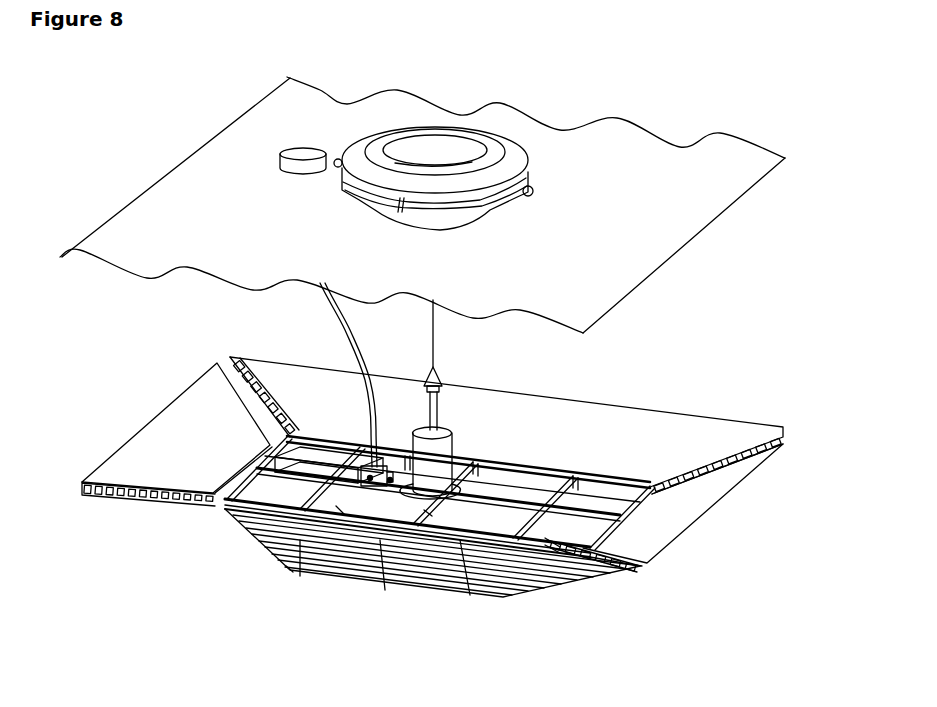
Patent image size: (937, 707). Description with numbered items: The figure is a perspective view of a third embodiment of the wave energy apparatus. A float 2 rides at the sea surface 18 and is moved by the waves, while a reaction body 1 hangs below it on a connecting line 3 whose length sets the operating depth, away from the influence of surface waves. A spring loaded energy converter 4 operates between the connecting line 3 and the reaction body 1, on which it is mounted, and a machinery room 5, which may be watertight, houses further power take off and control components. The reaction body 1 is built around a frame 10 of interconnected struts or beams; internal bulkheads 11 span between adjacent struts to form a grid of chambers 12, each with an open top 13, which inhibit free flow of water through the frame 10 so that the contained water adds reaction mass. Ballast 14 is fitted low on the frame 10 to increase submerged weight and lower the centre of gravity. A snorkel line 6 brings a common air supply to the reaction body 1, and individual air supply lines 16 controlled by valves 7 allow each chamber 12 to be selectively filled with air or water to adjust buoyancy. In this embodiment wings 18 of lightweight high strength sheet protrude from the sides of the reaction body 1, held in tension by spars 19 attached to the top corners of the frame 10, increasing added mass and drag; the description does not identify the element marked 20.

The reaction body 1 is at (237, 575).
The float 2 is at (508, 165).
The connecting line 3 is at (437, 349).
The spring loaded energy converter 4 is at (447, 470).
The machinery room 5 is at (485, 495).
The snorkel line 6 is at (360, 347).
The valves 7 is at (267, 443).
The frame 10 is at (233, 510).
The internal bulkheads 11 is at (557, 543).
The chambers 12 is at (293, 567).
The open top 13 is at (428, 513).
The ballast 14 is at (377, 580).
The individual air supply lines 16 is at (340, 510).
The wings 18 is at (670, 237).
The spars 19 is at (667, 525).
The upper right panel 20 is at (717, 457).